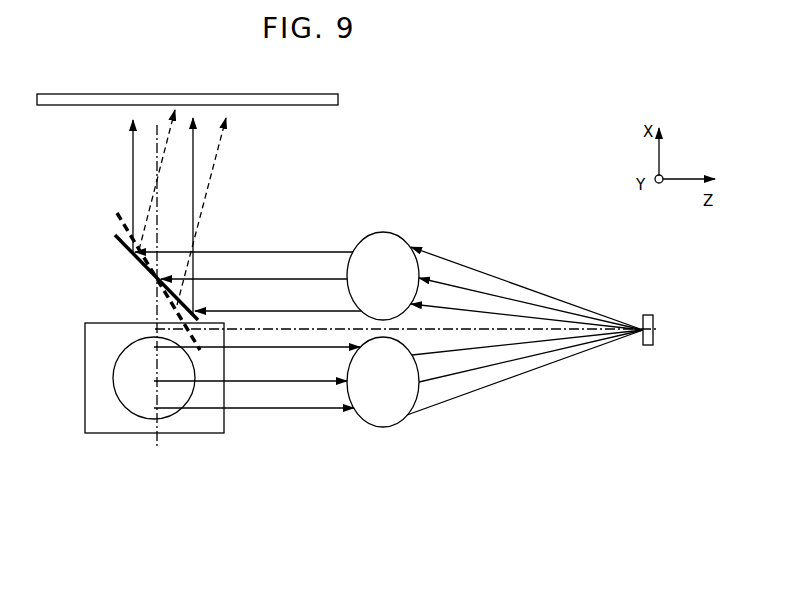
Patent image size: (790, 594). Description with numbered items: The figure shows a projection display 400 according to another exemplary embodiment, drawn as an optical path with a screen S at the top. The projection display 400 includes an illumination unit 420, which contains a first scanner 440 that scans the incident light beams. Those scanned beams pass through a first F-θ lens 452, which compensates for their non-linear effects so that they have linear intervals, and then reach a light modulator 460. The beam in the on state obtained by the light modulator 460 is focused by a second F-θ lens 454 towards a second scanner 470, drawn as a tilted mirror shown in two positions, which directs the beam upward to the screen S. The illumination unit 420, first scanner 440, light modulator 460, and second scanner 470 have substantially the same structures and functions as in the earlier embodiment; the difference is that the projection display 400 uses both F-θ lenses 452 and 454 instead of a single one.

The projection display 400 is at (492, 121).
The screen S is at (338, 99).
The illumination unit 420 is at (180, 433).
The first scanner 440 is at (113, 378).
The first F-θ lens 452 is at (390, 417).
The second F-θ lens 454 is at (385, 242).
The light modulator 460 is at (646, 315).
The second scanner 470 is at (131, 250).